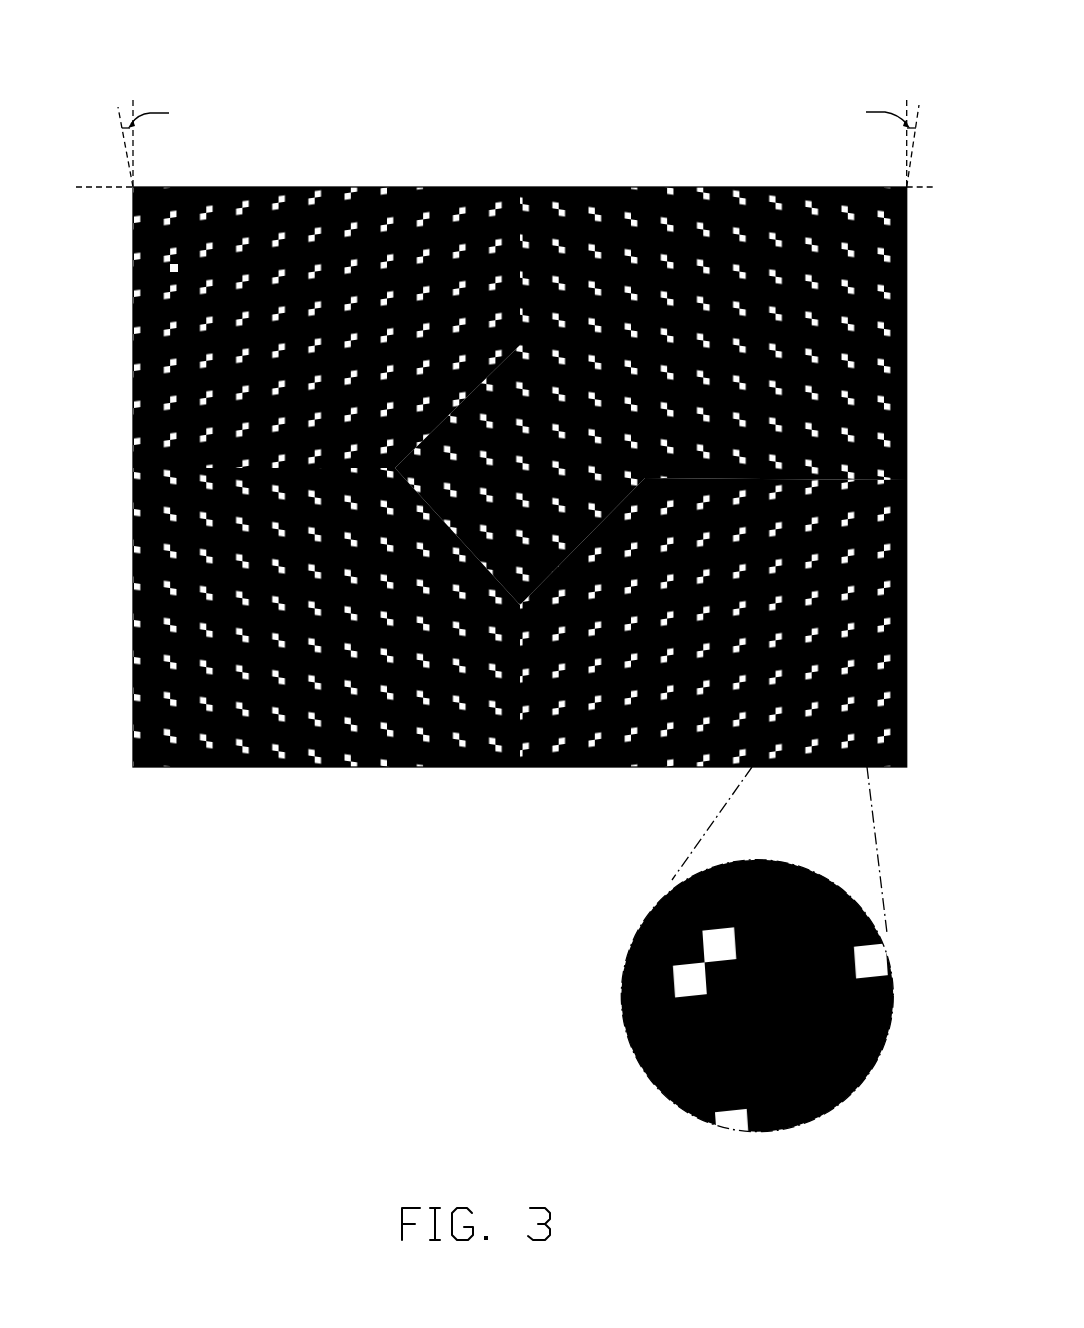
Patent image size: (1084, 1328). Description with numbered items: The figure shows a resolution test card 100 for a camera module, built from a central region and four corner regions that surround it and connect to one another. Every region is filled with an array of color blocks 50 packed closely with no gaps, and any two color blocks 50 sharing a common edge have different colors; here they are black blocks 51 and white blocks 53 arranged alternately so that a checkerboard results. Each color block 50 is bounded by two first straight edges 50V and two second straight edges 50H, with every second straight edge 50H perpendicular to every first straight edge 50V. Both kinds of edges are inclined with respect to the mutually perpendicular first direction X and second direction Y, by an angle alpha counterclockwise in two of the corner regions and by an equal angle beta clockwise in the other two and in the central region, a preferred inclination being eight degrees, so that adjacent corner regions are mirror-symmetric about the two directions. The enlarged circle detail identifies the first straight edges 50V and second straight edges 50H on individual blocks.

The resolution test card 100 is at (536, 34).
The color block 50 is at (88, 226).
The black block 51 is at (141, 237).
The white block 53 is at (176, 268).
The second straight edge 50H is at (707, 1005).
The first straight edge 50V is at (857, 1028).